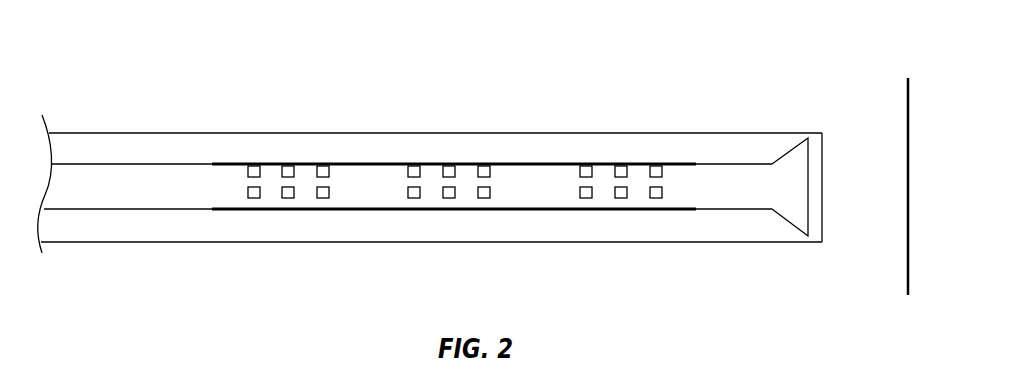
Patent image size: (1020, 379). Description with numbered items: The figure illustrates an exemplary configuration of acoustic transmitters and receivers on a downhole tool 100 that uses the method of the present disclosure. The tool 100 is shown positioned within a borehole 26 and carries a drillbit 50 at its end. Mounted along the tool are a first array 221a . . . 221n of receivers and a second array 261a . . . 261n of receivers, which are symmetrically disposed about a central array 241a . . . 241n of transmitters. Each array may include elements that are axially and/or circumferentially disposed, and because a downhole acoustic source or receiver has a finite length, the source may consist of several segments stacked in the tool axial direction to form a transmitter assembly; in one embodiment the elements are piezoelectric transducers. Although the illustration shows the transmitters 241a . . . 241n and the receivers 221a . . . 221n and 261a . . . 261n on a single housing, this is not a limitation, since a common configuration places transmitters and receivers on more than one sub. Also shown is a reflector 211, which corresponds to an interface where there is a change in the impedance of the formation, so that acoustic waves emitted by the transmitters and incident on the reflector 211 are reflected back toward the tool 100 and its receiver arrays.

The borehole 26 is at (118, 132).
The tool 100 is at (411, 211).
The receiver of first array 221a is at (256, 165).
The receiver of first array 221n is at (323, 164).
The transmitter 241a is at (416, 165).
The transmitter 241n is at (484, 164).
The receiver of second array 261a is at (587, 165).
The receiver of second array 261n is at (655, 164).
The drillbit 50 is at (780, 164).
The reflector 211 is at (906, 103).